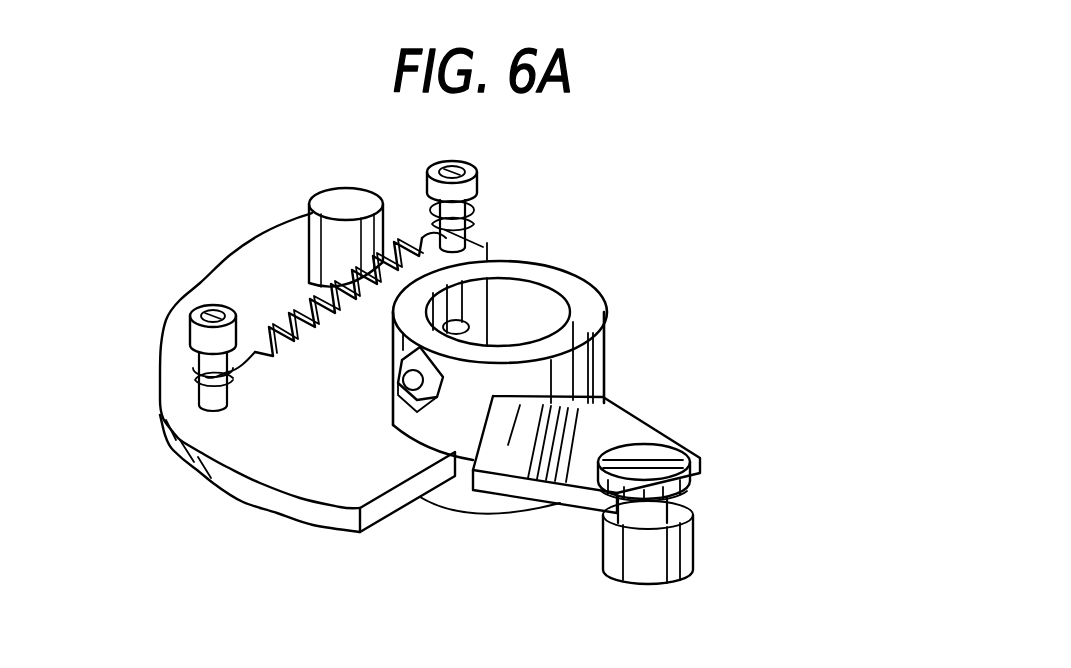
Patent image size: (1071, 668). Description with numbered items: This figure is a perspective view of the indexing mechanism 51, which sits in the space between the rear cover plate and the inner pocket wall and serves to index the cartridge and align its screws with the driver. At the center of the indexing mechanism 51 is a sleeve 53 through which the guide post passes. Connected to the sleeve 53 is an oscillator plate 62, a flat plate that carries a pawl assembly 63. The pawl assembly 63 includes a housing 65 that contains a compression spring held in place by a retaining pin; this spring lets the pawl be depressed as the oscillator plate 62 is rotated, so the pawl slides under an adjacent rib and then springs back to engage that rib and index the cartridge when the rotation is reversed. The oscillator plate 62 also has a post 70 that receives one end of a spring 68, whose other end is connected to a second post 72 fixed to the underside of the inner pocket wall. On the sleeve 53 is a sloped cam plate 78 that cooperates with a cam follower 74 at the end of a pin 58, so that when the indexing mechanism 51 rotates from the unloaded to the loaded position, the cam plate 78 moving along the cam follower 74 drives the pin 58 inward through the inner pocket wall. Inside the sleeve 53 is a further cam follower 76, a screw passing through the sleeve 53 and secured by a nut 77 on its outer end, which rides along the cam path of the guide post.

The indexing mechanism 51 is at (619, 164).
The sleeve 53 is at (586, 342).
The pin 58 is at (653, 567).
The oscillator plate 62 is at (240, 452).
The pawl assembly 63 is at (344, 182).
The housing 65 is at (310, 213).
The spring 68 is at (332, 318).
The post 70 is at (190, 332).
The second post 72 is at (472, 182).
The cam follower 74 is at (637, 510).
The cam follower 76 is at (447, 327).
The nut 77 is at (404, 418).
The sloped cam plate 78 is at (620, 422).